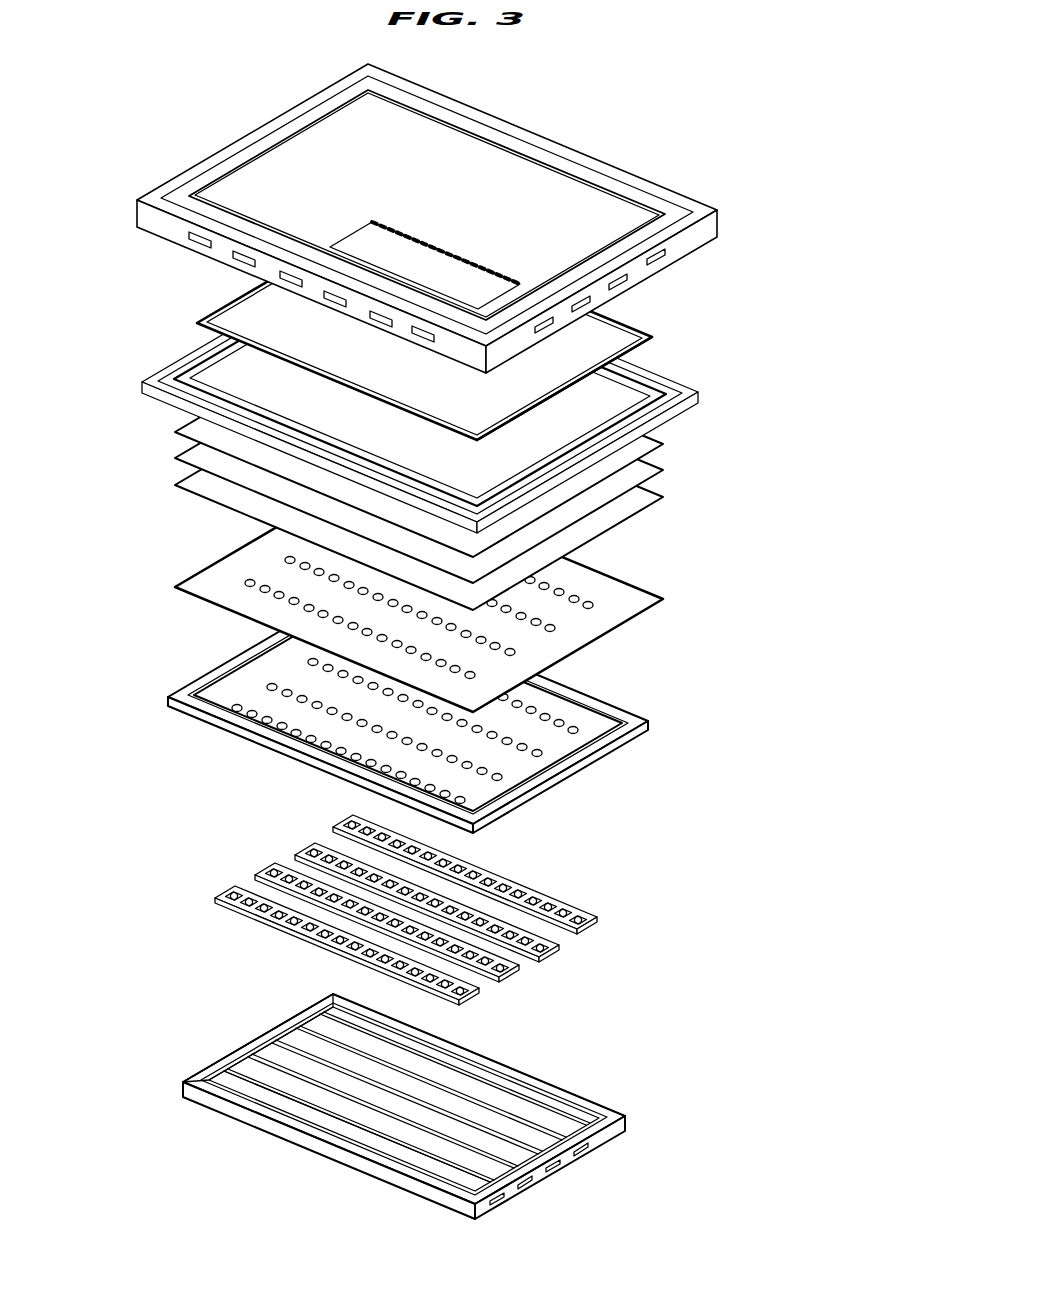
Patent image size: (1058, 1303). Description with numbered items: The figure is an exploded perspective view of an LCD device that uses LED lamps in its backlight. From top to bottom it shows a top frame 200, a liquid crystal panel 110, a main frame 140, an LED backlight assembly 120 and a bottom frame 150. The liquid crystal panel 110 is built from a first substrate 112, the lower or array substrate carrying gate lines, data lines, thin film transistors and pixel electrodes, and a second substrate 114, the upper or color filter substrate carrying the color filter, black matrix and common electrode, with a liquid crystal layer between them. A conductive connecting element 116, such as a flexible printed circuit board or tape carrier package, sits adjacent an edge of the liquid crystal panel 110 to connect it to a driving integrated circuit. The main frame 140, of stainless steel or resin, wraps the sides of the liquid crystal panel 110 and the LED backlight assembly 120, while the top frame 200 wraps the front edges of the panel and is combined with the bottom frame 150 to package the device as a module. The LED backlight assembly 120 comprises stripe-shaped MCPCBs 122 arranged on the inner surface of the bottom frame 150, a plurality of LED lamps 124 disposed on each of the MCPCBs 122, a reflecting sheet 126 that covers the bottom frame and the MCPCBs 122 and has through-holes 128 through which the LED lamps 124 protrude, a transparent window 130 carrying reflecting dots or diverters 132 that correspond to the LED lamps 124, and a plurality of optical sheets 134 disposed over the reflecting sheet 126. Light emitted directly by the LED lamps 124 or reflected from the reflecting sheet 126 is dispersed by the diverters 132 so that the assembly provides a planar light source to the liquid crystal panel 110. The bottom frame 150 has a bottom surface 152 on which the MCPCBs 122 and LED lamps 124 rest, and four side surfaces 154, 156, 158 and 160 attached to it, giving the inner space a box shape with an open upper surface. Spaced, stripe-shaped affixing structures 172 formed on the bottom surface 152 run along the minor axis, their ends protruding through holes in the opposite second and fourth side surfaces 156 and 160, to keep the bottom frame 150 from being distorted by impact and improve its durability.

The liquid crystal panel 110 is at (450, 376).
The first substrate 112 is at (365, 330).
The second substrate 114 is at (227, 315).
The conductive connecting element 116 is at (642, 320).
The LED backlight assembly 120 is at (497, 662).
The MCPCBs 122 is at (590, 923).
The LED lamps 124 is at (572, 898).
The reflecting sheet 126 is at (439, 713).
The through-holes 128 is at (499, 778).
The transparent window 130 is at (446, 593).
The diverters 132 is at (550, 631).
The optical sheets 134 is at (461, 465).
The main frame 140 is at (690, 391).
The bottom frame 150 is at (662, 1117).
The bottom surface 152 is at (203, 1070).
The first side surface 154 is at (307, 1148).
The second side surface 156 is at (237, 1050).
The third side surface 158 is at (515, 1060).
The fourth side surface 160 is at (548, 1177).
The affixing structures 172 is at (267, 1088).
The top frame 200 is at (718, 222).